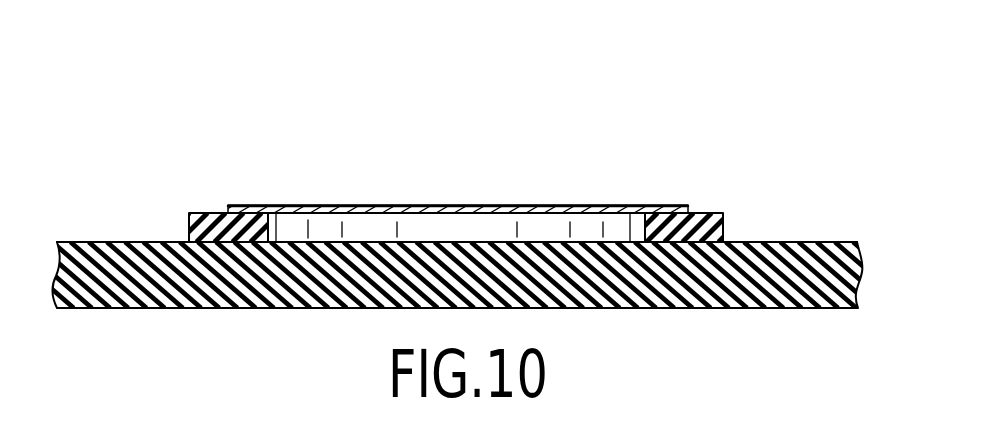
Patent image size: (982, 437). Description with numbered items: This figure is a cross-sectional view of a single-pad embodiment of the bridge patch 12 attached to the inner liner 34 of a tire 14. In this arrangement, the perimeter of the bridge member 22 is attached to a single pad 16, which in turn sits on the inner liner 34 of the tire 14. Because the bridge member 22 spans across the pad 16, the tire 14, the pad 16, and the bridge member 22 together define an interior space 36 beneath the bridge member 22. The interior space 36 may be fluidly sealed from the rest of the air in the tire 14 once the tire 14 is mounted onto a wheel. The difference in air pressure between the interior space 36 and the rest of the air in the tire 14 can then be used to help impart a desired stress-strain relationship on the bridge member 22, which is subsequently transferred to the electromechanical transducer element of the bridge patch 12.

The bridge patch 12 is at (395, 128).
The tire 14 is at (799, 293).
The pad 16 is at (215, 221).
The bridge member 22 is at (333, 210).
The inner liner 34 is at (808, 243).
The interior space 36 is at (492, 225).